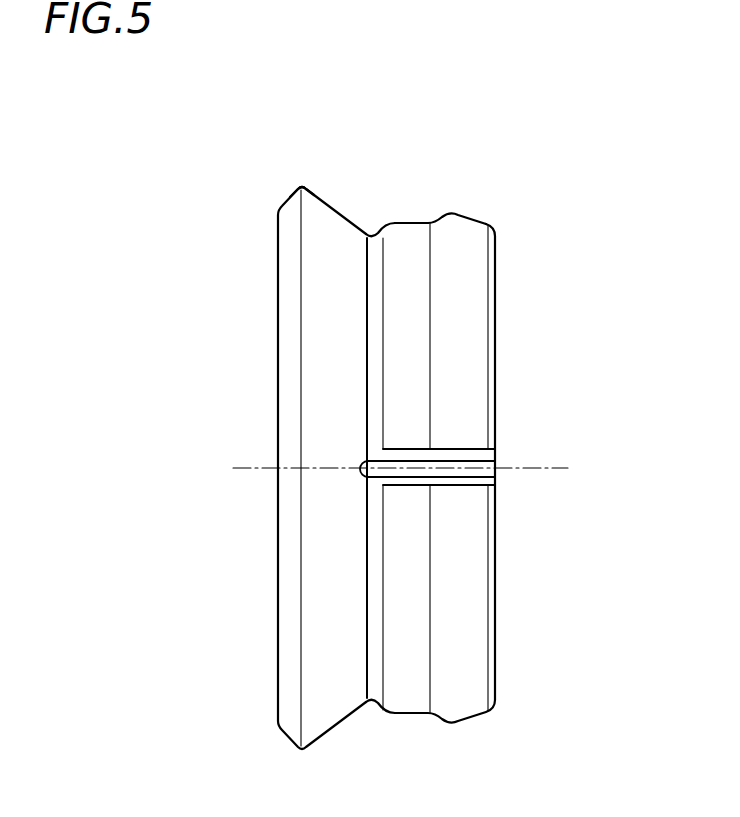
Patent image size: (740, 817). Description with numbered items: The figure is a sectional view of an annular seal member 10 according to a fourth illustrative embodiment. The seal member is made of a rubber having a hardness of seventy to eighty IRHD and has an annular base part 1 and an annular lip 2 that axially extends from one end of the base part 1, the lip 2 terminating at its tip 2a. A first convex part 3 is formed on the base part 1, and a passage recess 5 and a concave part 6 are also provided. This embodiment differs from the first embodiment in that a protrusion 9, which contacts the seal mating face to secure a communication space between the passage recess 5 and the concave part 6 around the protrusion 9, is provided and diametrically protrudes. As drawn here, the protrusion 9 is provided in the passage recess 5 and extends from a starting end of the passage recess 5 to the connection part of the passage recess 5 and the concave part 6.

The annular base part 1 is at (403, 639).
The annular lip 2 is at (323, 398).
The tip of plate portion 2a is at (302, 187).
The first convex part 3 is at (452, 212).
The passage recess 5 is at (485, 456).
The concave part 6 is at (374, 236).
The protrusion 9 is at (467, 471).
The annular seal member 10 is at (514, 251).